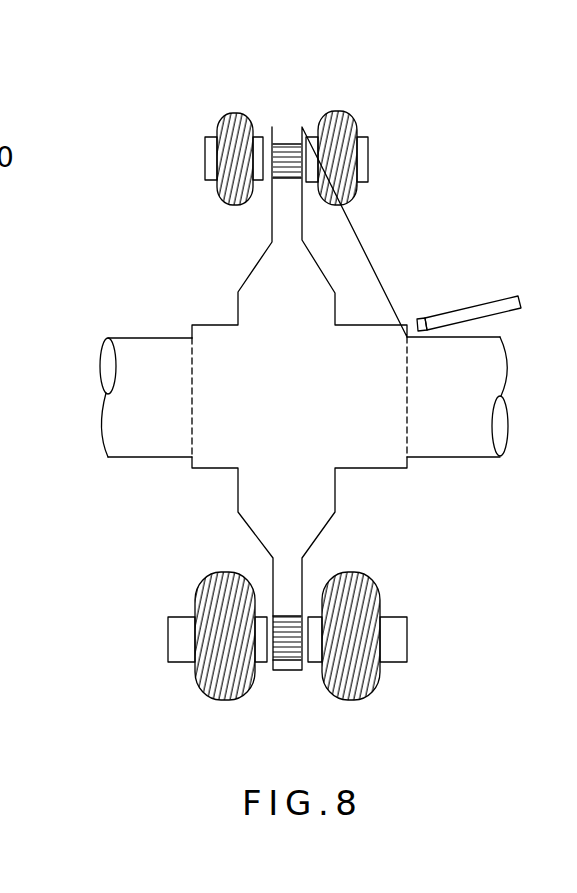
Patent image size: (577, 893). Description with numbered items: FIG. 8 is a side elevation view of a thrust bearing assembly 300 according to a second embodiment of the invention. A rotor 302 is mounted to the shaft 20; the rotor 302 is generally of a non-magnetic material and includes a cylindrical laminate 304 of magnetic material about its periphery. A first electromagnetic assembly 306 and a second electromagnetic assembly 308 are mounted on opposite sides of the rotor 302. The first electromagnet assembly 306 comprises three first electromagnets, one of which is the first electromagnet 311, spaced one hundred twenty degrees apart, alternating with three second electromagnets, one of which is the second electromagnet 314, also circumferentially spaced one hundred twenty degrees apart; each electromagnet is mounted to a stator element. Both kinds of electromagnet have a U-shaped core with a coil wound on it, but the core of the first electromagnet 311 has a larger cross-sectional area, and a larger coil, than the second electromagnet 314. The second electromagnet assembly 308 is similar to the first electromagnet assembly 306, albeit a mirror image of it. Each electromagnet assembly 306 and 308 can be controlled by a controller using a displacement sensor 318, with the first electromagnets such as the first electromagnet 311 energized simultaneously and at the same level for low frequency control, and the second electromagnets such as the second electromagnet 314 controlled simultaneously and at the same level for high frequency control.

The shaft 20 is at (435, 459).
The thrust bearing assembly 300 is at (399, 130).
The rotor 302 is at (318, 262).
The cylindrical laminate 304 is at (283, 133).
The first electromagnetic assembly 306 is at (163, 194).
The second electromagnetic assembly 308 is at (388, 166).
The first electromagnet 311 is at (195, 712).
The second electromagnet 314 is at (234, 112).
The displacement sensor 318 is at (488, 298).